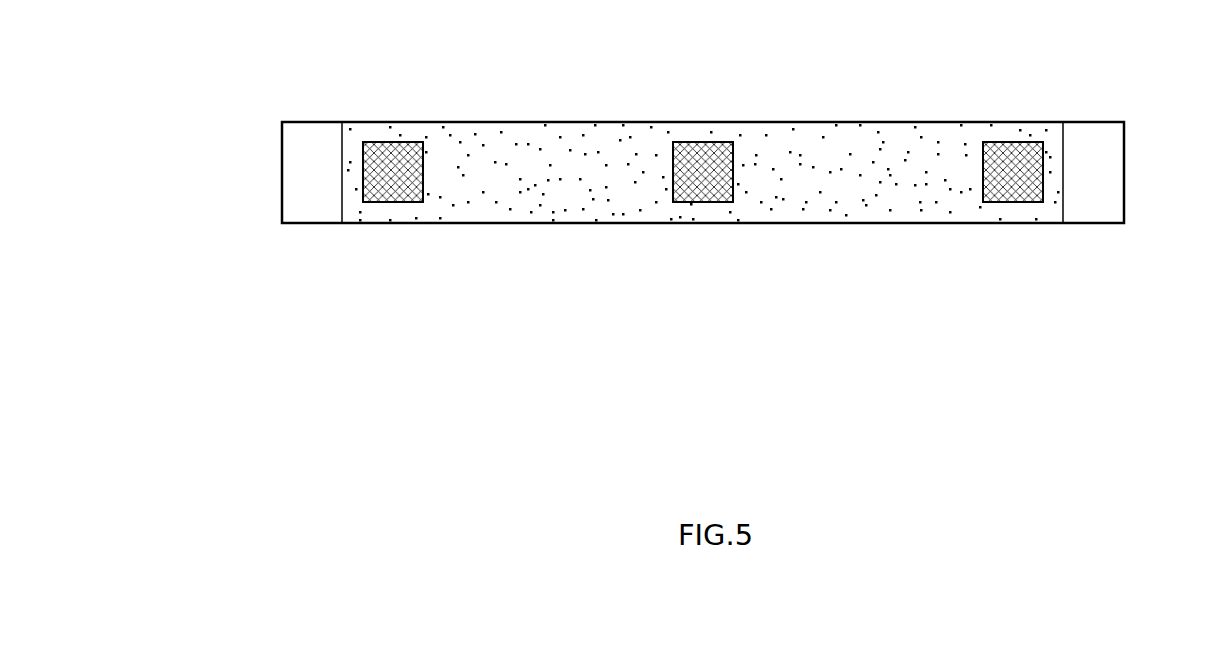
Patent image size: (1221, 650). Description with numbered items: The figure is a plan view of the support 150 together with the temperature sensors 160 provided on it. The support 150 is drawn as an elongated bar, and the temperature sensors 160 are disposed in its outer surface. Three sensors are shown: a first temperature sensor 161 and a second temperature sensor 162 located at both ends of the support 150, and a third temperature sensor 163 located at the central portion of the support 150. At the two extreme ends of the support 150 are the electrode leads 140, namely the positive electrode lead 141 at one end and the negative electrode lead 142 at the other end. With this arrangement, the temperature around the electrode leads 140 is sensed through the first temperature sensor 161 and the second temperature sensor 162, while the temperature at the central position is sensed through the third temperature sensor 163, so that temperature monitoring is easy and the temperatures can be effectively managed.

The electrode leads 140 is at (1028, 420).
The positive electrode lead 141 is at (300, 173).
The negative electrode lead 142 is at (1103, 172).
The support 150 is at (976, 92).
The temperature sensor 160 is at (851, 307).
The first temperature sensor 161 is at (392, 172).
The second temperature sensor 162 is at (1012, 172).
The third temperature sensor 163 is at (703, 172).